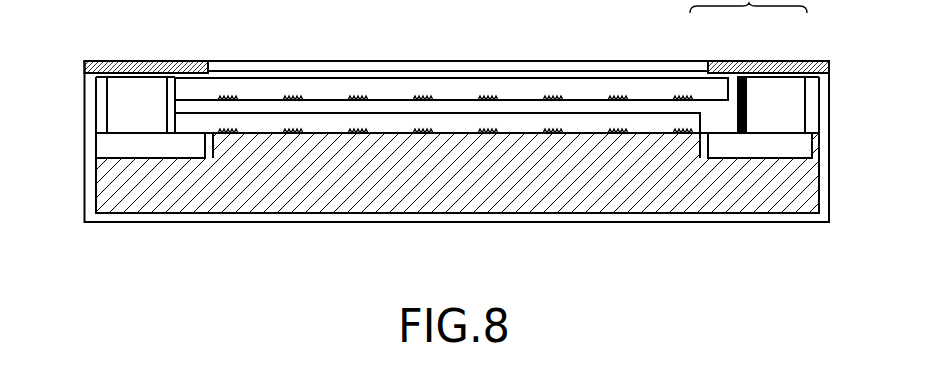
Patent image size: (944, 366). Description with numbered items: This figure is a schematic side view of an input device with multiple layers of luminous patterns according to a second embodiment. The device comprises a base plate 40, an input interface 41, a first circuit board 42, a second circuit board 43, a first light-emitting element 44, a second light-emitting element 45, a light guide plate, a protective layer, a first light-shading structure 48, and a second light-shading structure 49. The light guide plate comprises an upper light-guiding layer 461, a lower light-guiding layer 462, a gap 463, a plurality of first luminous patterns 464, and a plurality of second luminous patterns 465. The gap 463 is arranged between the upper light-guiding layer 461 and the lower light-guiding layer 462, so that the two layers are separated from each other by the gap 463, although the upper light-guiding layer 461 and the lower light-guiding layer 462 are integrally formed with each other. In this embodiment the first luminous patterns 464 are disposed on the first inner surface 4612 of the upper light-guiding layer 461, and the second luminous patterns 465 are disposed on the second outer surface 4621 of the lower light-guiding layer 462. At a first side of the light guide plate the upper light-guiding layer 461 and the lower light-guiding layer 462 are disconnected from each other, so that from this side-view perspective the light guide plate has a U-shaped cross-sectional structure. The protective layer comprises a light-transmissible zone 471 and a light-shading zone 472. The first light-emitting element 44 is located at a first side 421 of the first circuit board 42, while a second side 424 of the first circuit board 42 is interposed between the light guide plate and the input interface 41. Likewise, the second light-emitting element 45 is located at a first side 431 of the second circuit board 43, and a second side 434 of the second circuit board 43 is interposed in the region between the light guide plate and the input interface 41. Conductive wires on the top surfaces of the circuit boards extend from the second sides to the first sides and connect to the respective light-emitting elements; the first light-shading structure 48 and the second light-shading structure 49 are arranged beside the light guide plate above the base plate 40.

The base plate 40 is at (780, 217).
The input interface 41 is at (802, 190).
The first circuit board 42 is at (776, 150).
The first side of the first circuit board 421 is at (803, 147).
The second side of the first circuit board 424 is at (722, 145).
The second circuit board 43 is at (136, 149).
The first side of the second circuit board 431 is at (113, 150).
The second side of the second circuit board 434 is at (195, 145).
The first light-emitting element 44 is at (775, 92).
The second light-emitting element 45 is at (135, 92).
The upper light-guiding layer 461 is at (410, 85).
The first inner surface 4612 is at (333, 100).
The lower light-guiding layer 462 is at (330, 124).
The second outer surface 4621 is at (523, 133).
The gap 463 is at (530, 107).
The first luminous patterns 464 is at (352, 97).
The second luminous patterns 465 is at (355, 133).
The light-transmissible zone 471 is at (653, 62).
The light-shading zone 472 is at (733, 62).
The first light-shading structure 48 is at (743, 115).
The second light-shading structure 49 is at (174, 90).